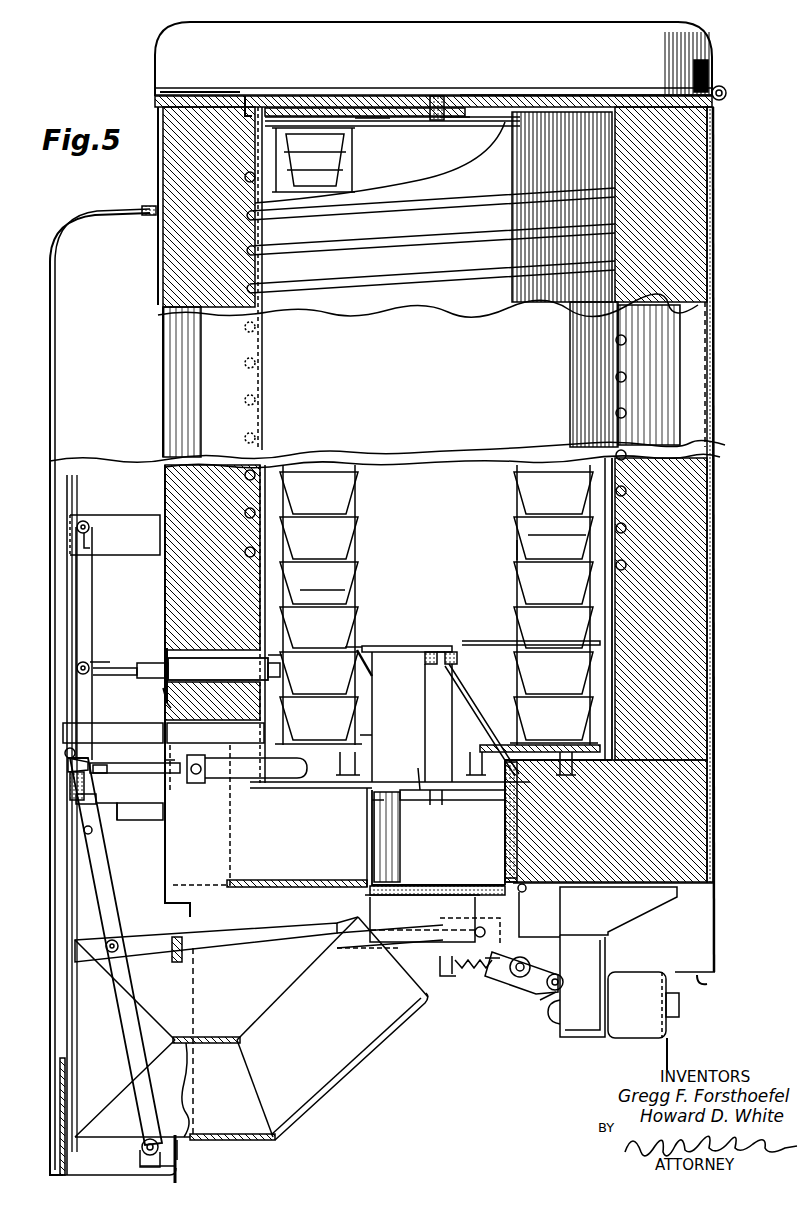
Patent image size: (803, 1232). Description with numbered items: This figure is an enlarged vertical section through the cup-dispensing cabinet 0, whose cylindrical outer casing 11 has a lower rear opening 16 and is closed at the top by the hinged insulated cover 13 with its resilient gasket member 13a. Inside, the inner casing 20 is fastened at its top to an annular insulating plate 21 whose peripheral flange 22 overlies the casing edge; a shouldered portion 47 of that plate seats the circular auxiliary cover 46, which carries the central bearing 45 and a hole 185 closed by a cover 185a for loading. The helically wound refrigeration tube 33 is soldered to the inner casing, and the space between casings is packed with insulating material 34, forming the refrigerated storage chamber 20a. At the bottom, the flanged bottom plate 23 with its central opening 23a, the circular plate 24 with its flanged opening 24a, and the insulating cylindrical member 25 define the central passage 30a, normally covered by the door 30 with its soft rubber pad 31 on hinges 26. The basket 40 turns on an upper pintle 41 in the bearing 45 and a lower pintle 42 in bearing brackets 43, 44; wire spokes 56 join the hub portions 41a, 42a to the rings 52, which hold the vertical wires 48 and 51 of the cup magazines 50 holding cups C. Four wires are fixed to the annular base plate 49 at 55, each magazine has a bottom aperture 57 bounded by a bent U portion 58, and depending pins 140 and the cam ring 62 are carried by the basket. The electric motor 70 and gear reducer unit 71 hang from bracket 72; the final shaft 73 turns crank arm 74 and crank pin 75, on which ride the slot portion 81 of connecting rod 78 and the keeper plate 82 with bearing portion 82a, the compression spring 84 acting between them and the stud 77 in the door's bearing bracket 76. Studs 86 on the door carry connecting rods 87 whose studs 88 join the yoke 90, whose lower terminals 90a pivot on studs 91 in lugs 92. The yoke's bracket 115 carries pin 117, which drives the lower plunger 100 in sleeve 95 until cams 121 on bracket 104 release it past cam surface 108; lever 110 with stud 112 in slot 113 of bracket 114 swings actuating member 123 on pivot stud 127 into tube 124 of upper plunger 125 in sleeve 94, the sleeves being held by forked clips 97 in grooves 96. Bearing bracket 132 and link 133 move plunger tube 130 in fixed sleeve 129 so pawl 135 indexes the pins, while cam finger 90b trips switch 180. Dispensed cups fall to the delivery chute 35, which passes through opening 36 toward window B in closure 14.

The insulated cover 13 is at (433, 59).
The resilient gasket member 13a is at (195, 92).
The annular plate 21 is at (175, 92).
The peripheral flange 22 is at (158, 104).
The circular auxiliary cover 46 is at (540, 96).
The shouldered portion 47 is at (248, 98).
The cover 185a is at (330, 96).
The hole 185 is at (380, 96).
The central bearing 45 is at (437, 100).
The upper pintle 41 is at (428, 120).
The hub portion 41a is at (447, 122).
The surrounding rings 52 is at (366, 122).
The radiating wire spokes 56 is at (487, 120).
The cam ring 62 is at (272, 200).
The cabinet 0 is at (158, 168).
The outer casing 11 is at (168, 364).
The insulating material 34 is at (690, 614).
The refrigeration tube 33 is at (628, 564).
The closure 14 is at (85, 235).
The window B is at (60, 950).
The flanged bottom plate 23 is at (595, 786).
The cup magazines 50 is at (356, 526).
The cups C is at (350, 616).
The vertical wires 48 is at (585, 534).
The vertical wires 51 is at (518, 548).
The plunger 125 is at (290, 666).
The plunger 100 is at (288, 723).
The bent U portion 58 is at (366, 678).
The basket 40 is at (380, 652).
The refrigerated storage chamber 20a is at (390, 717).
The inwardly facing aperture 57 is at (355, 726).
The lower pintle 42 is at (437, 640).
The hub portion 42a is at (472, 638).
The bearing bracket 43 is at (453, 718).
The bearing bracket 44 is at (480, 704).
The annular base plate 49 is at (540, 740).
The securing of wires to base plate 55 is at (590, 750).
The depending pins 140 is at (478, 766).
The inner casing 20 is at (615, 760).
The cylindrical member 25 is at (504, 812).
The pawl 135 is at (418, 790).
The central passage 30a is at (436, 837).
The flanged central opening 23a is at (385, 830).
The central flanged opening 24a is at (505, 870).
The circular plate 24 is at (717, 894).
The hinges 26 is at (524, 894).
The soft rubber pad 31 is at (476, 894).
The door 30 is at (422, 918).
The studs 86 is at (486, 926).
The bracket 72 is at (637, 962).
The gear reducer unit 71 is at (582, 994).
The electric motor 70 is at (643, 1021).
The opening 16 is at (712, 980).
The crank pin 75 is at (522, 962).
The crank arm 74 is at (518, 995).
The final shaft 73 is at (547, 998).
The bearing portion 82a is at (468, 966).
The keeper plate 82 is at (490, 985).
The bearing bracket 76 is at (462, 978).
The stud 77 is at (444, 976).
The slot portion 81 is at (546, 998).
The connecting rod 78 is at (428, 992).
The compression spring 84 is at (440, 946).
The bracket 114 is at (115, 535).
The stud 112 is at (86, 520).
The slot 113 is at (98, 540).
The lever 110 is at (92, 576).
The tube 124 is at (104, 660).
The grooves 96 is at (166, 656).
The forked clips 97 is at (164, 692).
The tubular guide sleeve 94 is at (224, 669).
The plunger actuating member 123 is at (104, 664).
The pivot stud 127 is at (76, 668).
The bracket 104 is at (113, 733).
The tubular guide sleeve 95 is at (215, 804).
The pin 117 is at (64, 750).
The inclined cam surface 108 is at (80, 760).
The inclined cams 121 is at (168, 744).
The bracket 115 is at (68, 770).
The bearing bracket 132 is at (70, 784).
The link 133 is at (100, 776).
The plunger tube 130 is at (185, 774).
The fixed sleeve 129 is at (256, 769).
The cam finger 90b is at (76, 800).
The switch 180 is at (78, 814).
The yoke 90 is at (90, 872).
The studs 91 is at (140, 1148).
The studs 88 is at (112, 940).
The connecting rods 87 is at (176, 958).
The delivery chute 35 is at (251, 1028).
The opening 36 is at (180, 1142).
The lugs 92 is at (182, 1172).
The lower terminals 90a is at (140, 1176).